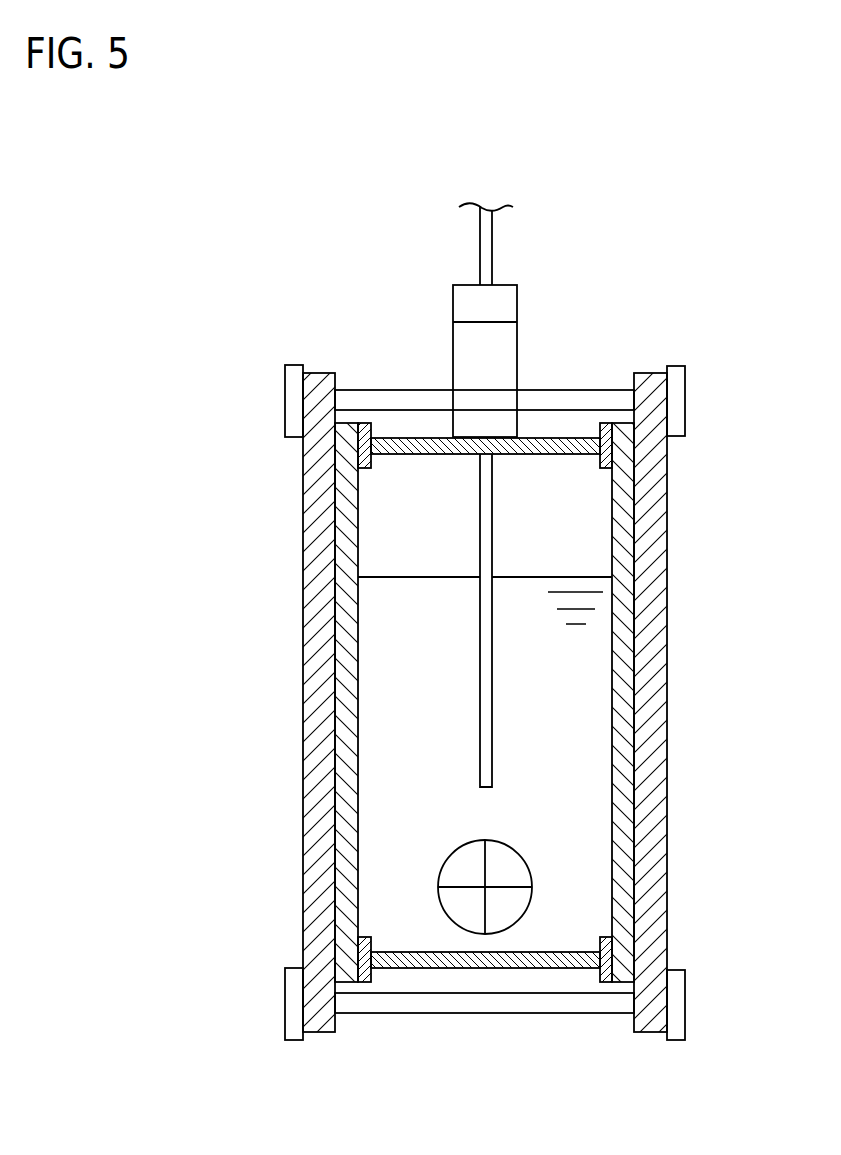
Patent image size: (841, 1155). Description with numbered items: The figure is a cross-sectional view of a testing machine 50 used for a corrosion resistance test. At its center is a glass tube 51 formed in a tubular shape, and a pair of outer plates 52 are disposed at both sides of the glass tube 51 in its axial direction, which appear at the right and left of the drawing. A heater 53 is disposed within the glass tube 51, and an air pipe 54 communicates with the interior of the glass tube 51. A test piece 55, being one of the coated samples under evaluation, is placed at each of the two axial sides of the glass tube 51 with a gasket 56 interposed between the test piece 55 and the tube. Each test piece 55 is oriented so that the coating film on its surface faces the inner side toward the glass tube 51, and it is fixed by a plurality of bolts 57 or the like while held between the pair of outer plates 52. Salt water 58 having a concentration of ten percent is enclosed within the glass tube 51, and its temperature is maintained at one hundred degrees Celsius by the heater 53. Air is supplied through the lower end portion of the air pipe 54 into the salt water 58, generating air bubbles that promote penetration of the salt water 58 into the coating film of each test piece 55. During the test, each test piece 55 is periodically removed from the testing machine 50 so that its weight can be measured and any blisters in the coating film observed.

The testing machine 50 is at (304, 251).
The glass tube 51 is at (418, 438).
The outer plates 52 is at (310, 713).
The heater 53 is at (462, 843).
The air pipe 54 is at (488, 737).
The test piece 55 is at (353, 672).
The gasket 56 is at (372, 465).
The bolts 57 is at (553, 400).
The salt water 58 is at (588, 803).